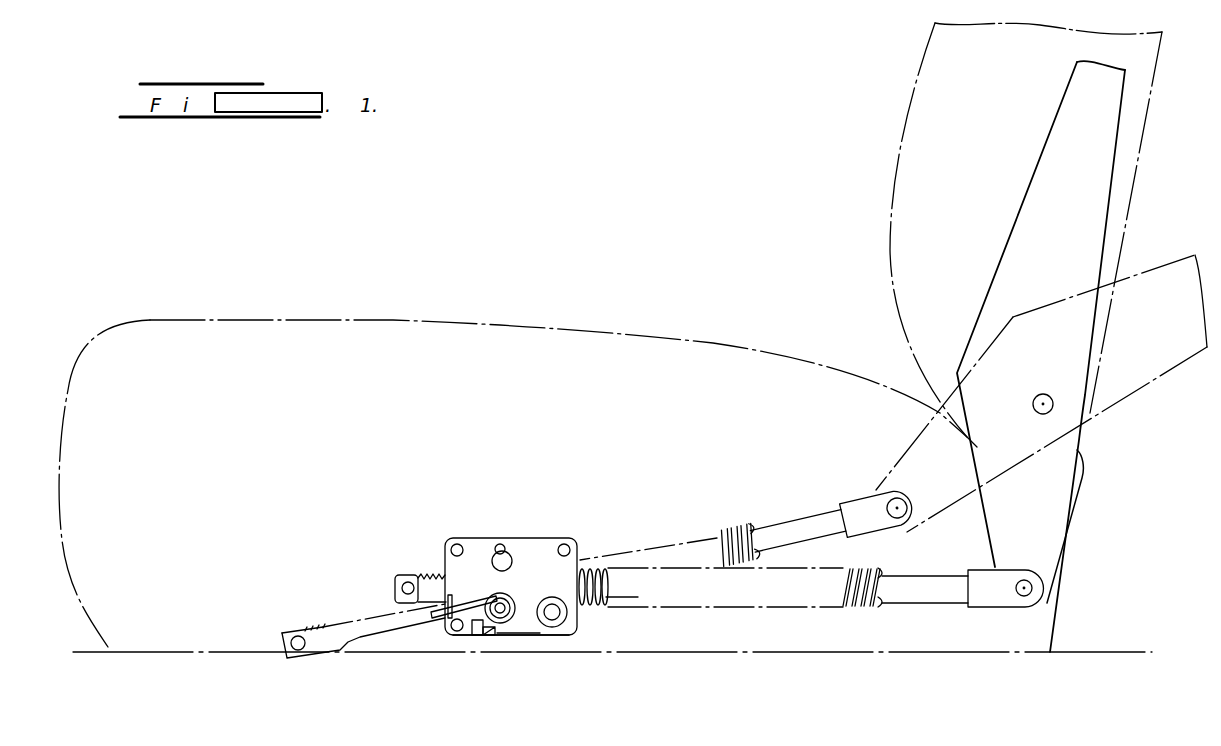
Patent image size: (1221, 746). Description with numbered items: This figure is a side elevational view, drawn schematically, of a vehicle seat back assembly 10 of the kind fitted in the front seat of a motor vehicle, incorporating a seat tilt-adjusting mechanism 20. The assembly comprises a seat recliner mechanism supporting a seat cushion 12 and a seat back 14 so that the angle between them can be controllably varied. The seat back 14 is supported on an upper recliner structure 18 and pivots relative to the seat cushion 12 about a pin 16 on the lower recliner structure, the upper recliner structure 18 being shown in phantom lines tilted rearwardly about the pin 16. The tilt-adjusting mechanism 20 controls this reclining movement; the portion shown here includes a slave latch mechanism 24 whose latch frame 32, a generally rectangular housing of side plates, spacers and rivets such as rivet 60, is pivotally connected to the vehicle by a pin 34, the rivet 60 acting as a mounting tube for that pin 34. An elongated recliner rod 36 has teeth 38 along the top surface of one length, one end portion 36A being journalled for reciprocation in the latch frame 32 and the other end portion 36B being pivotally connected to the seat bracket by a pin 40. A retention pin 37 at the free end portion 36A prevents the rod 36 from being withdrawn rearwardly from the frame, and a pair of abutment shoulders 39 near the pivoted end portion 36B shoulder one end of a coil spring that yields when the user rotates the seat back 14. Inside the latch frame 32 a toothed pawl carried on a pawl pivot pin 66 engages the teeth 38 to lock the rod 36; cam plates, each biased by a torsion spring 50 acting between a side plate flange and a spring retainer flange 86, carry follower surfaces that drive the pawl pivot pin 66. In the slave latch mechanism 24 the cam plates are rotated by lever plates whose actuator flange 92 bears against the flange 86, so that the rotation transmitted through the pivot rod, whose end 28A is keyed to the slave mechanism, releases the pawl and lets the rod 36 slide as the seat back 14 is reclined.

The vehicle seat back assembly 10 is at (528, 244).
The seat cushion 12 is at (425, 320).
The seat back 14 is at (893, 178).
The pin 16 is at (1043, 394).
The upper recliner structure 18 is at (1075, 505).
The seat back tilt-adjusting mechanism 20 is at (660, 527).
The slave latch mechanism 24 is at (579, 539).
The latch lever 28A is at (497, 603).
The latch frame 32 is at (578, 634).
The pin 34 is at (555, 622).
The recliner rod 36 is at (945, 604).
The end portion of recliner rod 36A is at (418, 582).
The end portion of recliner rod 36B is at (992, 607).
The retention pin 37 is at (397, 583).
The teeth 38 is at (433, 575).
The abutment shoulders 39 is at (874, 608).
The pin 40 is at (1033, 588).
The torsion spring 50 is at (506, 601).
The rivet 60 is at (540, 630).
The pawl pivot pin 66 is at (505, 553).
The spring retainer flange 86 is at (478, 638).
The actuator flange 92 is at (488, 640).